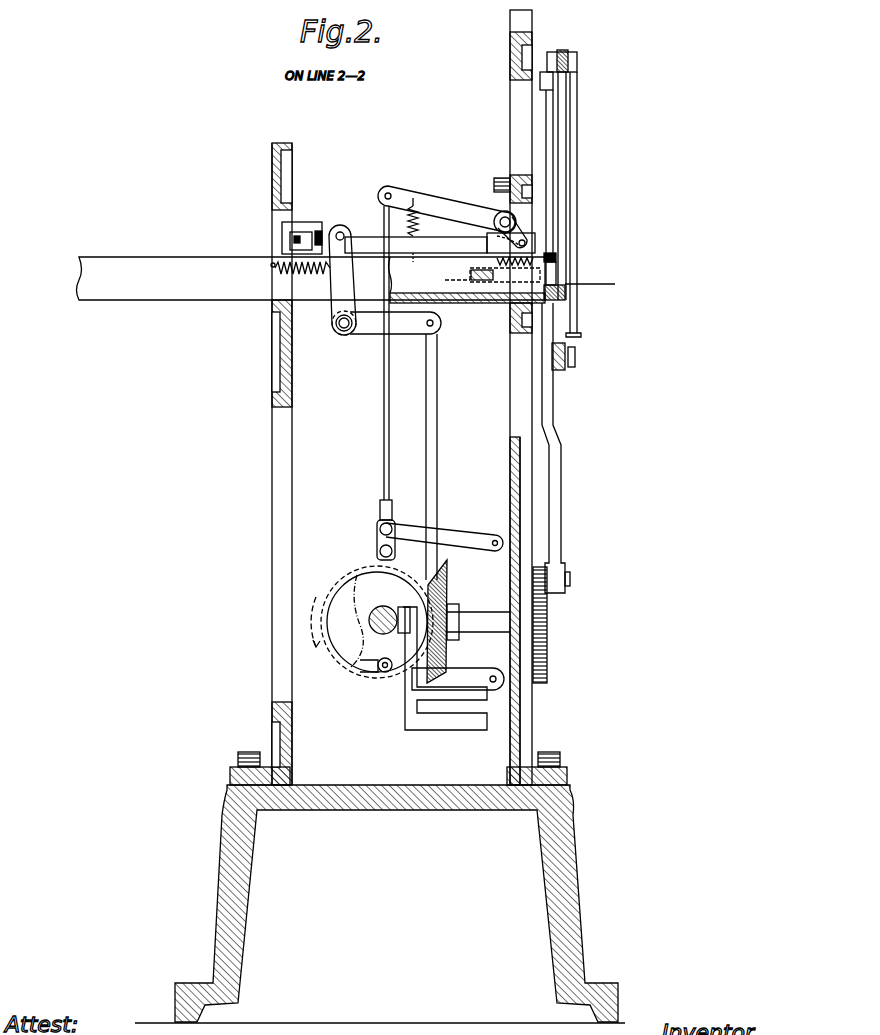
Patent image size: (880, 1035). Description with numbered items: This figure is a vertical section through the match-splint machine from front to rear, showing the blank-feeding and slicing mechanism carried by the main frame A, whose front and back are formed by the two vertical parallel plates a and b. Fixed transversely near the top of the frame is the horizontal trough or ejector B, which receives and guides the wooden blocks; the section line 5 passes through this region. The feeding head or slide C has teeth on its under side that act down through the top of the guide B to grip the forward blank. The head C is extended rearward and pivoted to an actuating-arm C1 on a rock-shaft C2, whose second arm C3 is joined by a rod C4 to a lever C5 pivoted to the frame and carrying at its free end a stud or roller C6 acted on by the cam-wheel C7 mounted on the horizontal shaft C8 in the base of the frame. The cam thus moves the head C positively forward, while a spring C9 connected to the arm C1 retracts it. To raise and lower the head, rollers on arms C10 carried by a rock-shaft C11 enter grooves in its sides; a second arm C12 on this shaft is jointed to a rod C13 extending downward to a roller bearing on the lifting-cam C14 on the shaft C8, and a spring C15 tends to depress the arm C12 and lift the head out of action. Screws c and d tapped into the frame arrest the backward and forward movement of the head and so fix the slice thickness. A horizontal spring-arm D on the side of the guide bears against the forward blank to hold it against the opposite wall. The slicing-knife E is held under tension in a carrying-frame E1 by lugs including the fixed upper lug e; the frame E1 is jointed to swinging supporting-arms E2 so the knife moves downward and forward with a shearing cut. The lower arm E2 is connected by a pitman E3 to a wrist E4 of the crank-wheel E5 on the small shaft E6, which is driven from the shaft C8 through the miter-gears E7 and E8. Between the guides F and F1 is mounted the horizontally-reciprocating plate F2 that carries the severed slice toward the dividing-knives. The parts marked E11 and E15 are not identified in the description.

The main frame A is at (266, 168).
The front plate a is at (515, 397).
The back plate b is at (281, 464).
The trough or ejector B is at (480, 304).
The head or slide C is at (539, 237).
The actuating-arm C1 is at (348, 281).
The rock-shaft C2 is at (345, 335).
The second arm C3 is at (395, 322).
The rod C4 is at (437, 441).
The lever C5 is at (458, 677).
The stud or roller C6 is at (403, 680).
The cam-wheel C7 is at (377, 622).
The horizontal shaft C8 is at (376, 632).
The spring C9 is at (300, 279).
The arms C10 is at (511, 241).
The rock-shaft C11 is at (493, 216).
The second arm C12 is at (446, 209).
The rod C13 is at (383, 228).
The lifting-cam C14 is at (362, 670).
The spring C15 is at (424, 230).
The screw c is at (319, 231).
The screw d is at (298, 234).
The horizontal spring-arm D is at (505, 283).
The slicing-knife E is at (567, 240).
The carrying-frame E1 is at (546, 108).
The rod E11 is at (578, 74).
The supporting-arms E2 is at (562, 52).
The pitman E3 is at (561, 459).
The wrist E4 is at (568, 582).
The crank-wheel E5 is at (548, 616).
The small shaft E6 is at (481, 622).
The miter-gear E7 is at (448, 586).
The miter-gear E8 is at (332, 590).
The rod E15 is at (560, 157).
The projecting lug e is at (546, 81).
The guide F is at (556, 258).
The guide F1 is at (565, 292).
The horizontally-reciprocating plate F2 is at (556, 272).
The section line 5 5 is at (445, 280).